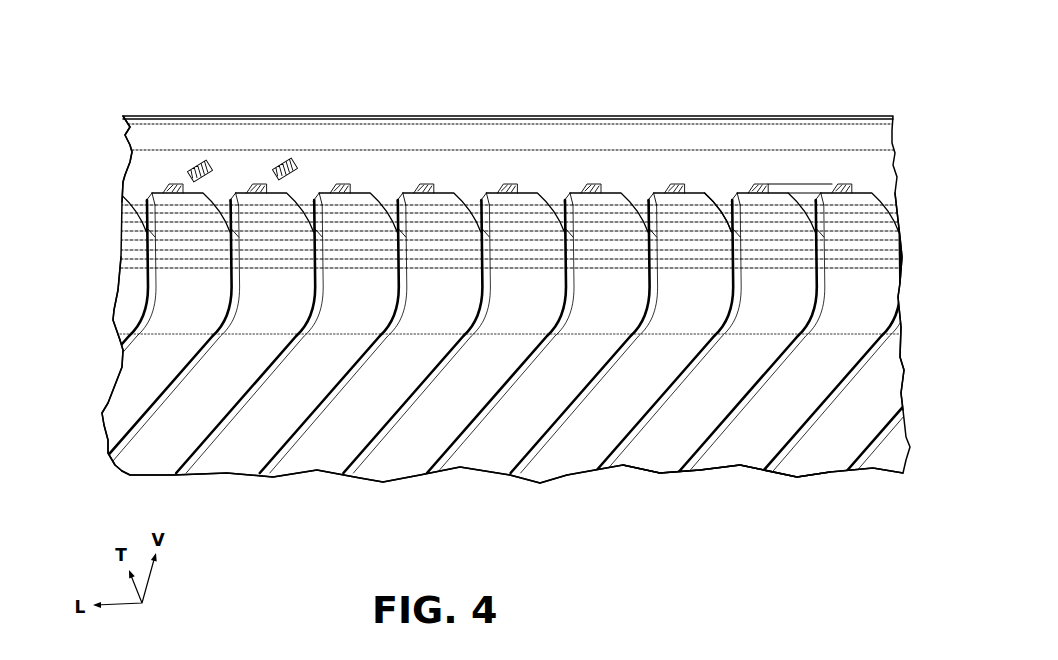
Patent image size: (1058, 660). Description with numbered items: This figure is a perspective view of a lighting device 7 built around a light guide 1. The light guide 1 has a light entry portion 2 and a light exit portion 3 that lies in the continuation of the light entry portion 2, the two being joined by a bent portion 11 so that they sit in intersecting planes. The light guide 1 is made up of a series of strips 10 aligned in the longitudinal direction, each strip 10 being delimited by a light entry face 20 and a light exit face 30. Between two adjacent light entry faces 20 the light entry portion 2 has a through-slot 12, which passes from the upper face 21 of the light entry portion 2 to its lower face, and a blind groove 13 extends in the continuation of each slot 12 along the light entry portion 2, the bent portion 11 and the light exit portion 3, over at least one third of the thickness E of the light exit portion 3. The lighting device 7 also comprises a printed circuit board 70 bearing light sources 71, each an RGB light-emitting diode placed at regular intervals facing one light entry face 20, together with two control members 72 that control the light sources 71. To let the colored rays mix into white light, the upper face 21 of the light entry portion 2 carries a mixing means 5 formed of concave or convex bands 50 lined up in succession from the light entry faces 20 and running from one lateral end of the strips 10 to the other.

The light guide 1 is at (580, 494).
The light entry portion 2 is at (909, 261).
The light exit portion 3 is at (130, 384).
The mixing means 5 is at (770, 237).
The lighting device 7 is at (110, 114).
The strip 10 is at (733, 440).
The bent portion 11 is at (130, 285).
The slot 12 is at (718, 200).
The groove 13 is at (743, 403).
The light entry face 20 is at (489, 193).
The upper face 21 is at (610, 198).
The light exit face 30 is at (218, 403).
The band 50 is at (858, 224).
The printed circuit board 70 is at (128, 178).
The light source 71 is at (673, 188).
The control member 72 is at (200, 166).
The thickness E is at (396, 228).